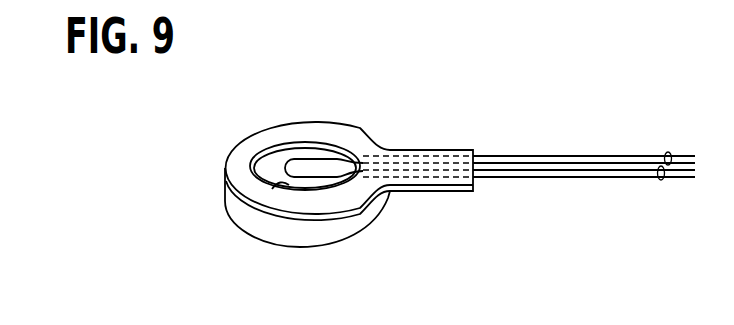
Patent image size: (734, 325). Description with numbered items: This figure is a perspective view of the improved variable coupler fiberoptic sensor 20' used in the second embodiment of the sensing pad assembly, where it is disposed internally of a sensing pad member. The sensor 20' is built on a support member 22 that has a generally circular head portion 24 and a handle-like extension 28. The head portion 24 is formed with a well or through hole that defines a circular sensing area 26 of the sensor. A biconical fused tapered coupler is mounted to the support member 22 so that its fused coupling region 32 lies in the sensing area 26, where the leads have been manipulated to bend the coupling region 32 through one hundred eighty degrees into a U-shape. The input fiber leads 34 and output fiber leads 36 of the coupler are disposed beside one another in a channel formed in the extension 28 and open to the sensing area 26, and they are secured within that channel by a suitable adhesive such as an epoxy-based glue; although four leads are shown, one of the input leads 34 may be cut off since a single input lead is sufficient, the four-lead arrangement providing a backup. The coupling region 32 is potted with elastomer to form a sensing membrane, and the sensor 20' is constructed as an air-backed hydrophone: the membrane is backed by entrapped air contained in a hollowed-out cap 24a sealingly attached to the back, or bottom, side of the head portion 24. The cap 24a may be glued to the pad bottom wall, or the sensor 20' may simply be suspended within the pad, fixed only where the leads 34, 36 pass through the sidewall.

The variable coupler fiberoptic sensor 20' is at (426, 169).
The support member 22 is at (345, 121).
The head portion 24 is at (294, 132).
The hollowed-out cap 24a is at (360, 220).
The circular sensing area 26 is at (275, 186).
The handle-like extension 28 is at (438, 152).
The fused coupling region 32 is at (285, 168).
The input fiber leads 34 is at (668, 152).
The output fiber leads 36 is at (661, 180).